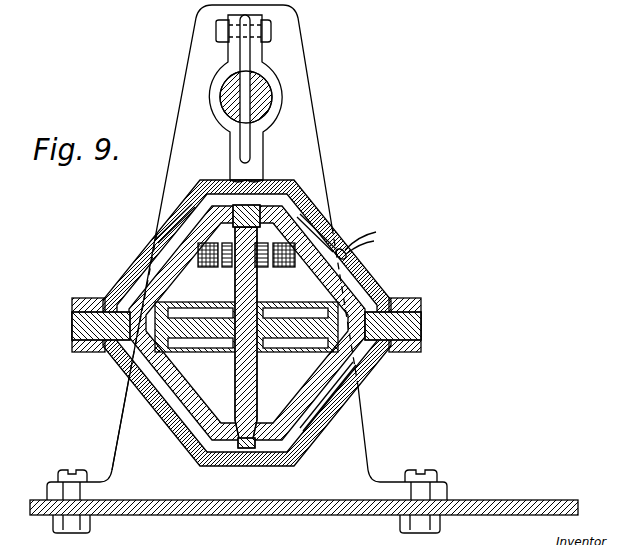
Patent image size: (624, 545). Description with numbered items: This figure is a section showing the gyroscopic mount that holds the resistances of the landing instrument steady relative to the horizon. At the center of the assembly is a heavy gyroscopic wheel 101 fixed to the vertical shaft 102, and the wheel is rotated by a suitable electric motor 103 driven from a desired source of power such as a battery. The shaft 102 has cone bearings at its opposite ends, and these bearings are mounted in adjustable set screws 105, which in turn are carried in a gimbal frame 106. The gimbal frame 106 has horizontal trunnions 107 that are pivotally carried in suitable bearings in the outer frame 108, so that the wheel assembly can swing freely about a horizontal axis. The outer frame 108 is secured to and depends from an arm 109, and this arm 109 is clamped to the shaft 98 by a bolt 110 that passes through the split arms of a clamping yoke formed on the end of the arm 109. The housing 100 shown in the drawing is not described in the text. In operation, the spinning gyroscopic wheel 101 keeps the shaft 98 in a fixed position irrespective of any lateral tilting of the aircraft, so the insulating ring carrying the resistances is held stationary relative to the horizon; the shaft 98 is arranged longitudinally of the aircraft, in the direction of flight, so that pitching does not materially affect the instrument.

The shaft 98 is at (258, 97).
The housing 100 is at (393, 289).
The gyroscopic wheel 101 is at (297, 334).
The vertical shaft 102 is at (236, 375).
The electric motor 103 is at (207, 268).
The adjustable set screws 105 is at (258, 211).
The gimbal frame 106 is at (328, 222).
The horizontal trunnions 107 is at (421, 330).
The outer frame 108 is at (421, 302).
The arm 109 is at (262, 168).
The bolt 110 is at (215, 33).